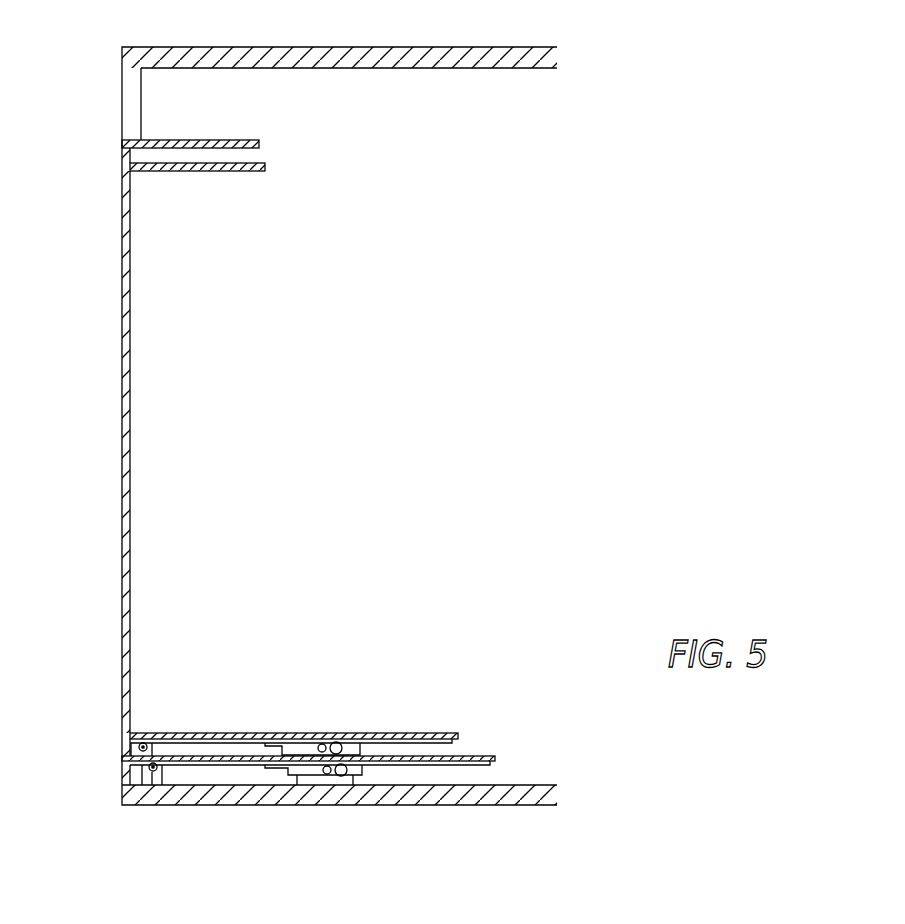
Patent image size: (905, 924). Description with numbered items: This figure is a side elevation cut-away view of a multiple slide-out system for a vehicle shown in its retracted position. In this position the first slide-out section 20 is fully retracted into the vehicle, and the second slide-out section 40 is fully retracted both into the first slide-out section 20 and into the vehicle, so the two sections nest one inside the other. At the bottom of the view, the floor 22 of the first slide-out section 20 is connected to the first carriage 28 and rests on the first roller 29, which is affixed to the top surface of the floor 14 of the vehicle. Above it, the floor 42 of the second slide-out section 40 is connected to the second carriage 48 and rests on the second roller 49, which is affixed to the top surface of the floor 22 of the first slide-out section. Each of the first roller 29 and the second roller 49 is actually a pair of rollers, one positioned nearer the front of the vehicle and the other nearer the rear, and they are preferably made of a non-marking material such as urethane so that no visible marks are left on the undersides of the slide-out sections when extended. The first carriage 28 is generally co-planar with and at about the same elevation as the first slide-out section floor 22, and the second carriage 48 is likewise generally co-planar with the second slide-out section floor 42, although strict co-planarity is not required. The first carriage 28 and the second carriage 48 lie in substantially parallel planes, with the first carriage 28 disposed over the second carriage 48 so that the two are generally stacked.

The floor of the vehicle 14 is at (535, 785).
The first slide-out section 20 is at (218, 136).
The second slide-out section 40 is at (273, 165).
The floor of second slide-out section 42 is at (186, 733).
The second carriage 48 is at (413, 733).
The floor of first slide-out section 22 is at (210, 756).
The first carriage 28 is at (482, 756).
The second roller 49 is at (139, 746).
The first roller 29 is at (149, 767).